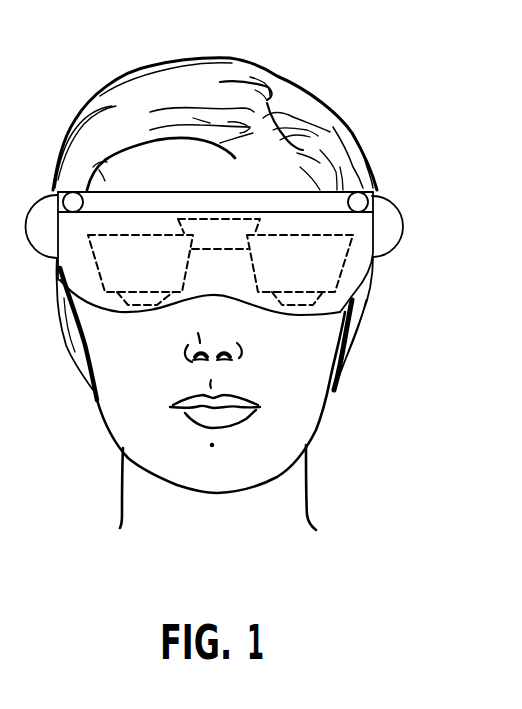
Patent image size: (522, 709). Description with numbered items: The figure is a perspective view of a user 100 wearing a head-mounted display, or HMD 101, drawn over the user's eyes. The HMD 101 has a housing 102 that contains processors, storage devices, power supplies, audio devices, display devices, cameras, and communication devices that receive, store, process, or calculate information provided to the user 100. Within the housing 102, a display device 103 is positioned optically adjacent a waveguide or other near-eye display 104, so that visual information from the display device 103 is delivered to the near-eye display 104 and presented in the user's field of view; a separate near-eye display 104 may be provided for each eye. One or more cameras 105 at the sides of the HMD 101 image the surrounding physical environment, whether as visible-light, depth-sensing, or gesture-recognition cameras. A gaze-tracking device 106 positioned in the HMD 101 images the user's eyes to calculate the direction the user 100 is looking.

The user 100 is at (380, 50).
The HMD 101 is at (410, 105).
The housing 102 is at (405, 172).
The display device 103 is at (263, 222).
The near-eye display 104 is at (343, 266).
The camera 105 is at (367, 203).
The gaze-tracking device 106 is at (313, 302).